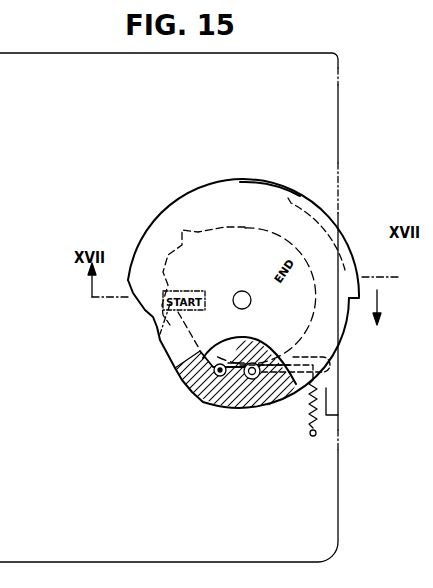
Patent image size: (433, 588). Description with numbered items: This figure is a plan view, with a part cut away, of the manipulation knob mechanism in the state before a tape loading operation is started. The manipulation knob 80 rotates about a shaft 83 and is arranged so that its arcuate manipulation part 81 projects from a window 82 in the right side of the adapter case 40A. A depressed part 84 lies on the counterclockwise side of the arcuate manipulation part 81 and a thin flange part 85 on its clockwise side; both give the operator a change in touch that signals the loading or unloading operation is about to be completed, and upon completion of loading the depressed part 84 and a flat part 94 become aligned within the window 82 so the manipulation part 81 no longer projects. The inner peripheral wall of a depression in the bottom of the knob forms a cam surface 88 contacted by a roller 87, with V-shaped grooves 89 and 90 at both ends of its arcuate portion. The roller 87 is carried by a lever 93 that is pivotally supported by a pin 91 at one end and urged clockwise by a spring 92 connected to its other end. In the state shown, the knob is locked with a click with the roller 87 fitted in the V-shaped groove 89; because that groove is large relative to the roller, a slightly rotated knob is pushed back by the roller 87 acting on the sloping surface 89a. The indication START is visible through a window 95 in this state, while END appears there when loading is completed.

The manipulation knob 80 is at (180, 184).
The arcuate manipulation part 81 is at (253, 180).
The window 82 is at (340, 383).
The shaft 83 is at (243, 290).
The depressed part 84 is at (148, 312).
The thin flange part 85 is at (340, 250).
The roller 87 is at (252, 380).
The cam surface 88 is at (248, 225).
The V-shaped groove 89 is at (221, 378).
The sloping surface 89a is at (259, 341).
The V-shaped groove 90 is at (186, 247).
The pin 91 is at (220, 363).
The spring 92 is at (310, 407).
The lever 93 is at (326, 356).
The flat part 94 is at (173, 368).
The window 95 is at (163, 331).
The adapter case 40A is at (338, 496).